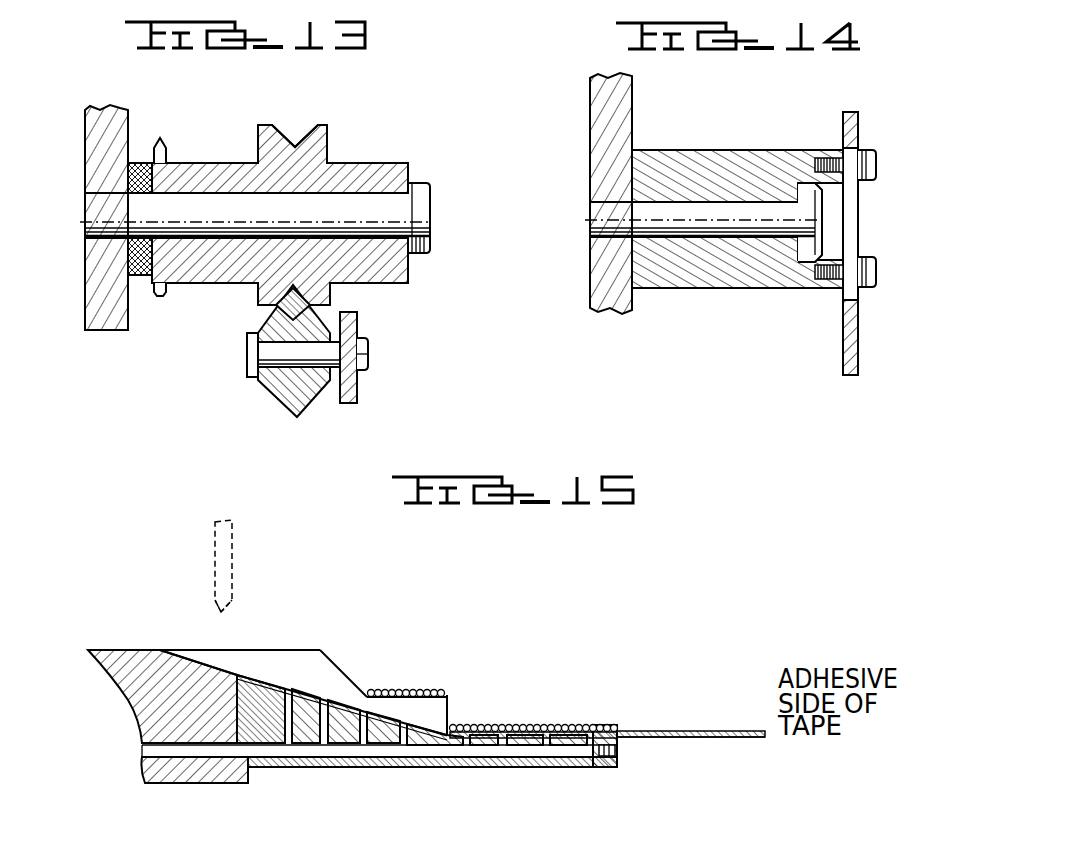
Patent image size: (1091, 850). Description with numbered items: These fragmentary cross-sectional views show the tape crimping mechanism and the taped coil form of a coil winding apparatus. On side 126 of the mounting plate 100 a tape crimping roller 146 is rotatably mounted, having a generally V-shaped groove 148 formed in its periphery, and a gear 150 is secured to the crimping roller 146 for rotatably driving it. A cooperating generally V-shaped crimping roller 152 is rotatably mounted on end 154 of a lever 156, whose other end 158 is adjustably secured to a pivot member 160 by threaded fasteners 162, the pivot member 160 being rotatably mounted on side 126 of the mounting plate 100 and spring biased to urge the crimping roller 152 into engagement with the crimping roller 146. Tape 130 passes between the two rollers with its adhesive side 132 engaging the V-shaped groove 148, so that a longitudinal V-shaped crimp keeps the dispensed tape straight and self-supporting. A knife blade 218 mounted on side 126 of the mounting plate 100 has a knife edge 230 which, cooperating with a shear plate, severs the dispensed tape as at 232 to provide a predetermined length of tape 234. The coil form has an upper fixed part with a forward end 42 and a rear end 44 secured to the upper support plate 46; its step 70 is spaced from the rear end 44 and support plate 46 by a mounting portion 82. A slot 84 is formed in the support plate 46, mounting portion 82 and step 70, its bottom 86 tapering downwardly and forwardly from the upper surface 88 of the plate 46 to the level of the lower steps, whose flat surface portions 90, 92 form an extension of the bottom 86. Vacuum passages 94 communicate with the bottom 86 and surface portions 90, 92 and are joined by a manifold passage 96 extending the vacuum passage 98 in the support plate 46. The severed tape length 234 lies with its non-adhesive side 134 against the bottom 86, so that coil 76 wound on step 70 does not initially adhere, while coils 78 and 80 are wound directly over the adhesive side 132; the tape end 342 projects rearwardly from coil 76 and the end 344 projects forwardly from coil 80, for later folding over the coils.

In FIG. 13, the mounting plate 100 is at (112, 198).
In FIG. 14, the mounting plate 100 is at (611, 190).
In FIG. 13, the side of mounting plate 126 is at (130, 122).
In FIG. 14, the side of mounting plate 126 is at (634, 120).
In FIG. 13, the tape crimping roller 146 is at (338, 130).
In FIG. 13, the V-shaped groove 148 is at (265, 126).
In FIG. 13, the gear 150 is at (168, 150).
In FIG. 13, the tape 130 is at (275, 300).
In FIG. 13, the cooperating V-shaped crimping roller 152 is at (285, 385).
In FIG. 13, the end of lever 154 is at (360, 335).
In FIG. 13, the lever 156 is at (372, 392).
In FIG. 14, the lever 156 is at (862, 318).
In FIG. 14, the pivot member 160 is at (697, 158).
In FIG. 14, the other end of lever 158 is at (860, 113).
In FIG. 14, the threaded fasteners 162 is at (880, 165).
In FIG. 15, the forward end 42 is at (620, 762).
In FIG. 15, the rear end 44 is at (249, 649).
In FIG. 15, the upper support plate 46 is at (145, 698).
In FIG. 15, the step 70 is at (450, 715).
In FIG. 15, the coil 76 is at (398, 690).
In FIG. 15, the coil 78 is at (495, 722).
In FIG. 15, the coil 80 is at (560, 722).
In FIG. 15, the mounting portion 82 is at (320, 665).
In FIG. 15, the slot 84 is at (363, 690).
In FIG. 15, the bottom of slot 86 is at (197, 662).
In FIG. 15, the upper surface 88 is at (162, 650).
In FIG. 15, the flat surface portion 90 is at (515, 727).
In FIG. 15, the flat surface portion 92 is at (585, 727).
In FIG. 15, the vacuum passages 94 is at (288, 727).
In FIG. 15, the manifold passage 96 is at (428, 760).
In FIG. 15, the vacuum passage 98 is at (215, 755).
In FIG. 15, the adhesive side 132 is at (678, 729).
In FIG. 15, the non-adhesive side 134 is at (707, 738).
In FIG. 15, the knife blade 218 is at (237, 525).
In FIG. 15, the knife edge 230 is at (225, 607).
In FIG. 15, the severance point 232 is at (213, 670).
In FIG. 15, the severed length of tape 234 is at (661, 717).
In FIG. 15, the tape end 342 is at (283, 677).
In FIG. 15, the tape end 344 is at (759, 728).